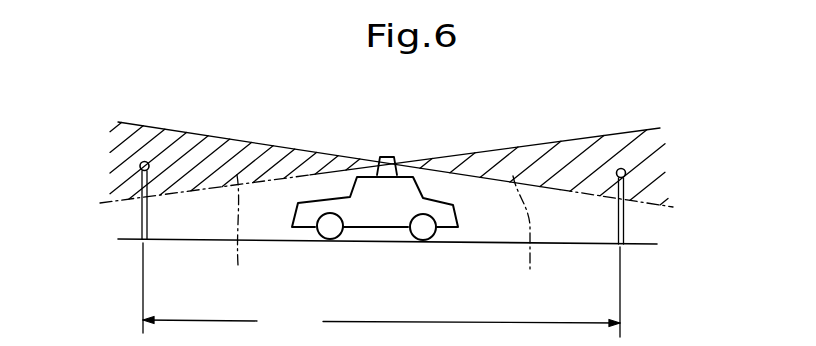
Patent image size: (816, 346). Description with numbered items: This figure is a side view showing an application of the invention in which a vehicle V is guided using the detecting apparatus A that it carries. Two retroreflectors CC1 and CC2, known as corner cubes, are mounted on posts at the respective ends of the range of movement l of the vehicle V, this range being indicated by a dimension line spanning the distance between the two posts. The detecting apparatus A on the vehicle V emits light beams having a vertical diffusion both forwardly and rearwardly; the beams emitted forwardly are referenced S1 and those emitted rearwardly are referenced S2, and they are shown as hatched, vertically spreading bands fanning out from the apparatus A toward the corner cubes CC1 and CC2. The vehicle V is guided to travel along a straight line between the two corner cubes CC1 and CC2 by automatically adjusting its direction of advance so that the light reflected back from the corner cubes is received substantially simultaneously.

The retroreflector CC1 is at (141, 172).
The retroreflector CC2 is at (627, 173).
The detecting apparatus A is at (388, 158).
The vehicle V is at (392, 229).
The light beams emitted forwardly S1 is at (243, 235).
The light beams emitted rearwardly S2 is at (537, 239).
The range of movement l is at (301, 322).